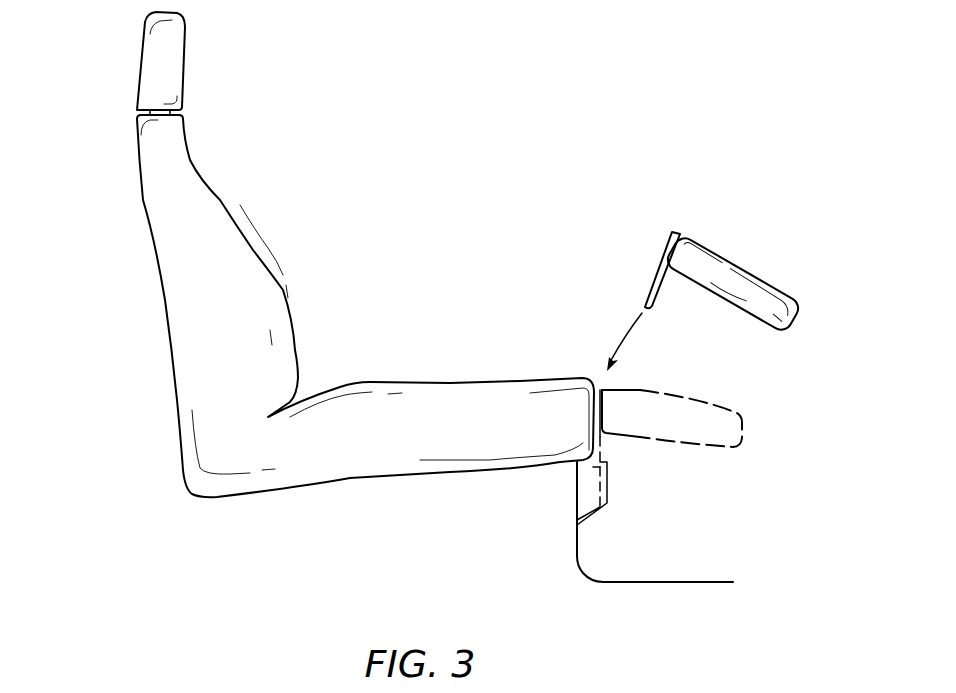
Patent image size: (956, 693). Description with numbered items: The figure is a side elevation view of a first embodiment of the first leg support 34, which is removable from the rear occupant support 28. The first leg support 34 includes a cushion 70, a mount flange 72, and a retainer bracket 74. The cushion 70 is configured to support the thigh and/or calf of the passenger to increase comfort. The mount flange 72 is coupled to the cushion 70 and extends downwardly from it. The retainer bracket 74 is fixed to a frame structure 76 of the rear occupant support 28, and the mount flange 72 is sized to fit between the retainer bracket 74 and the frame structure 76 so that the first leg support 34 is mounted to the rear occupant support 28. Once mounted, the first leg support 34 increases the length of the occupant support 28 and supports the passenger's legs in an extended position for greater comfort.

The rear occupant support 28 is at (99, 178).
The first leg support 34 is at (717, 359).
The cushion 70 is at (783, 307).
The mount flange 72 is at (658, 268).
The retainer bracket 74 is at (607, 478).
The frame structure 76 is at (576, 546).